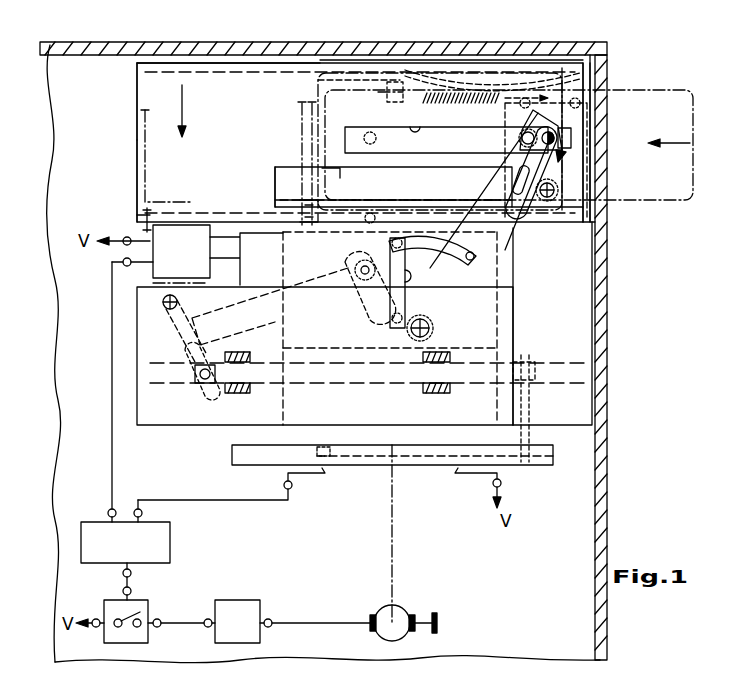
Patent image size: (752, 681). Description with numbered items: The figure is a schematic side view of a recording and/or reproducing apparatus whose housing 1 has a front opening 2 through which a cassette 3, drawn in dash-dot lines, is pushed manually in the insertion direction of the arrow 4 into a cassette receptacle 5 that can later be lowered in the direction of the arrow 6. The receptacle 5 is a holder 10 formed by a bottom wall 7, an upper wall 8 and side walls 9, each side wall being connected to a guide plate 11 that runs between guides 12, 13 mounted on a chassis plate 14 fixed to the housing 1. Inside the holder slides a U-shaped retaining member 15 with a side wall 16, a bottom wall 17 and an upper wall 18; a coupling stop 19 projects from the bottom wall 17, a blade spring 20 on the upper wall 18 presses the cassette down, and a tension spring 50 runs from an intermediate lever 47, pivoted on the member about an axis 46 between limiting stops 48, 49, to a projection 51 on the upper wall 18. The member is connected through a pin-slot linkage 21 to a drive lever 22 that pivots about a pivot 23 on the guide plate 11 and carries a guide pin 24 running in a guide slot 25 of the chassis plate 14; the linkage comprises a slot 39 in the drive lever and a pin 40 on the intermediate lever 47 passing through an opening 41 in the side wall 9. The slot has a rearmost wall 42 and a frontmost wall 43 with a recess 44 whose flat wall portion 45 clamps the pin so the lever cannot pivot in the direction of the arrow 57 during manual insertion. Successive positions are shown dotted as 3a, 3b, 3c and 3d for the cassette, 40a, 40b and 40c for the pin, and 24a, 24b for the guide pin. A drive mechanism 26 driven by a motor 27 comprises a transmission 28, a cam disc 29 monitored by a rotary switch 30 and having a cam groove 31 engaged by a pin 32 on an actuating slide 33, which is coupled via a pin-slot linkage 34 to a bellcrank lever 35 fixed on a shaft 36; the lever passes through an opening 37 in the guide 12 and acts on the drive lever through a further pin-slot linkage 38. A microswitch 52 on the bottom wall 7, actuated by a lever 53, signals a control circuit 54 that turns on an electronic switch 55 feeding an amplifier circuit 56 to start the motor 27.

The apparatus housing 1 is at (608, 393).
The front opening 2 is at (600, 220).
The cassette 3 is at (693, 152).
The cassette position 3a is at (302, 105).
The cassette insertion position 3b is at (310, 135).
The cassette position 3c is at (145, 130).
The cassette position 3d is at (148, 231).
The arrow 4 is at (676, 143).
The cassette receptacle 5 is at (122, 163).
The arrow 6 is at (183, 100).
The bottom wall 7 is at (140, 217).
The upper wall 8 is at (150, 63).
The side wall 9 is at (148, 88).
The holder 10 is at (137, 143).
The guide plate 11 is at (275, 168).
The guide 12 is at (284, 400).
The guide 13 is at (500, 400).
The chassis plate 14 is at (183, 425).
The retaining member 15 is at (597, 84).
The side wall 16 is at (320, 78).
The bottom wall 17 is at (420, 200).
The upper wall 18 is at (338, 75).
The coupling stop 19 is at (326, 172).
The blade spring 20 is at (478, 80).
The pin-slot linkage 21 is at (575, 140).
The drive lever 22 is at (495, 205).
The pivot 23 is at (433, 333).
The guide pin 24 is at (470, 268).
The guide pin position 24a is at (362, 262).
The guide pin position 24b is at (392, 325).
The guide slot 25 is at (408, 280).
The drive mechanism 26 is at (527, 490).
The motor 27 is at (408, 618).
The transmission 28 is at (393, 538).
The cam disc 29 is at (232, 456).
The rotary switch 30 is at (280, 475).
The cam groove 31 is at (332, 468).
The pin 32 is at (528, 414).
The actuating slide 33 is at (350, 390).
The pin-slot linkage 34 is at (190, 372).
The bellcrank lever 35 is at (218, 305).
The shaft 36 is at (170, 308).
The opening 37 is at (268, 388).
The pin-slot linkage 38 is at (350, 274).
The slot 39 is at (521, 225).
The pin 40 is at (554, 136).
The pin position 40a is at (535, 127).
The pin position 40b is at (368, 132).
The pin position 40c is at (372, 212).
The opening 41 is at (415, 128).
The rearmost longitudinal wall 42 is at (558, 152).
The frontmost longitudinal wall 43 is at (518, 178).
The recess 44 is at (520, 135).
The flat wall portion 45 is at (535, 148).
The pivotal axis 46 is at (549, 202).
The intermediate lever 47 is at (541, 92).
The first limiting stop 48 is at (524, 97).
The second limiting stop 49 is at (575, 97).
The tension spring 50 is at (423, 95).
The projection 51 is at (378, 72).
The switching device 52 is at (153, 272).
The lever 53 is at (300, 207).
The control circuit 54 is at (170, 540).
The electronic switch 55 is at (152, 605).
The amplifier circuit 56 is at (260, 604).
The arrow 57 is at (437, 272).